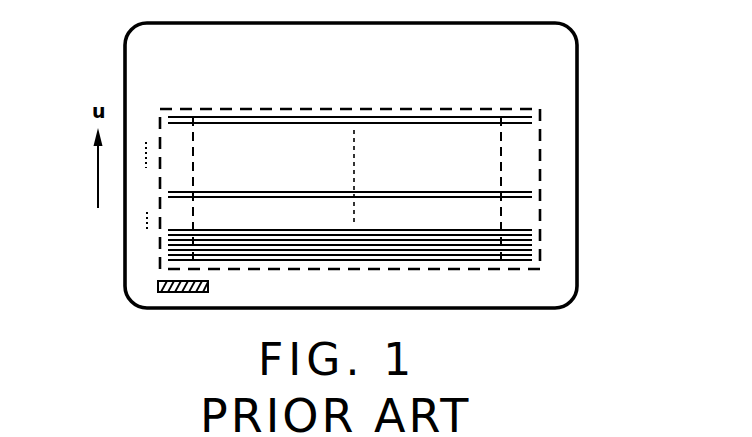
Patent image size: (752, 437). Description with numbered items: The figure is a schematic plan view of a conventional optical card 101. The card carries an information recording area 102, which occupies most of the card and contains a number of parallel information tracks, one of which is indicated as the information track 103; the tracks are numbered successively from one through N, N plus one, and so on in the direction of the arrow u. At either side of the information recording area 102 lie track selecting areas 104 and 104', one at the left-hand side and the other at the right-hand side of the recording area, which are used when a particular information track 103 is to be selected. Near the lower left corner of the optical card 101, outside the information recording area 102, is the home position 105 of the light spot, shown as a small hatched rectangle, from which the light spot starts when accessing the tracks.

The optical card 101 is at (577, 95).
The information recording area 102 is at (312, 138).
The information track 103 is at (518, 190).
The track selecting area 104 is at (110, 182).
The track selecting area 104' is at (415, 191).
The home position of a light spot 105 is at (158, 287).